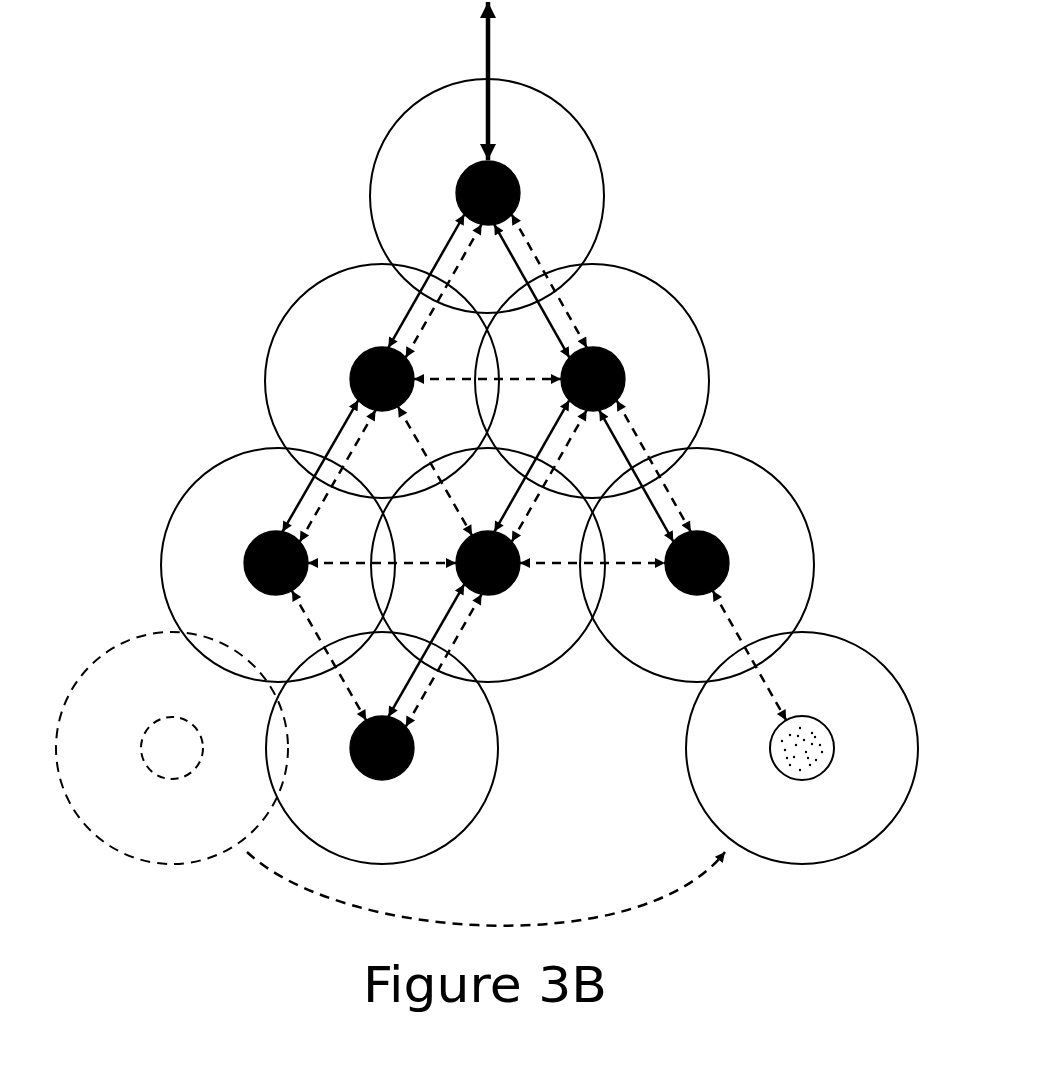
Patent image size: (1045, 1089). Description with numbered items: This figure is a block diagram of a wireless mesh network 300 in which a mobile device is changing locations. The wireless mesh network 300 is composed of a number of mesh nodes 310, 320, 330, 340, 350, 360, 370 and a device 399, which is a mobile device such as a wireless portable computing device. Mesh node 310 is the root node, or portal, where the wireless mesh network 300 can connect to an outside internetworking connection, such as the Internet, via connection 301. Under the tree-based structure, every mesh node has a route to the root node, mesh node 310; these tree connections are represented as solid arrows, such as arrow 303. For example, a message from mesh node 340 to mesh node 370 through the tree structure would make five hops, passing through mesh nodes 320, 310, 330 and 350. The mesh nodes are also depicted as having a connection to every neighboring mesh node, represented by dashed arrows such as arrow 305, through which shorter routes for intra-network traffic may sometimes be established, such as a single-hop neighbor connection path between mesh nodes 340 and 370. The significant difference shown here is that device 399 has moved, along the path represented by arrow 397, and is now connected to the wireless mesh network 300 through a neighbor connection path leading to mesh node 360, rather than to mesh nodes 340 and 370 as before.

The wireless mesh network 300 is at (255, 147).
The connection 301 is at (492, 42).
The arrow 303 is at (440, 260).
The arrow 305 is at (537, 260).
The mesh node 310 is at (457, 157).
The mesh node 320 is at (351, 342).
The mesh node 330 is at (675, 342).
The mesh node 340 is at (249, 527).
The mesh node 350 is at (555, 636).
The mesh node 360 is at (779, 527).
The mesh node 370 is at (449, 820).
The arrow 397 is at (640, 897).
The device 399 is at (884, 709).